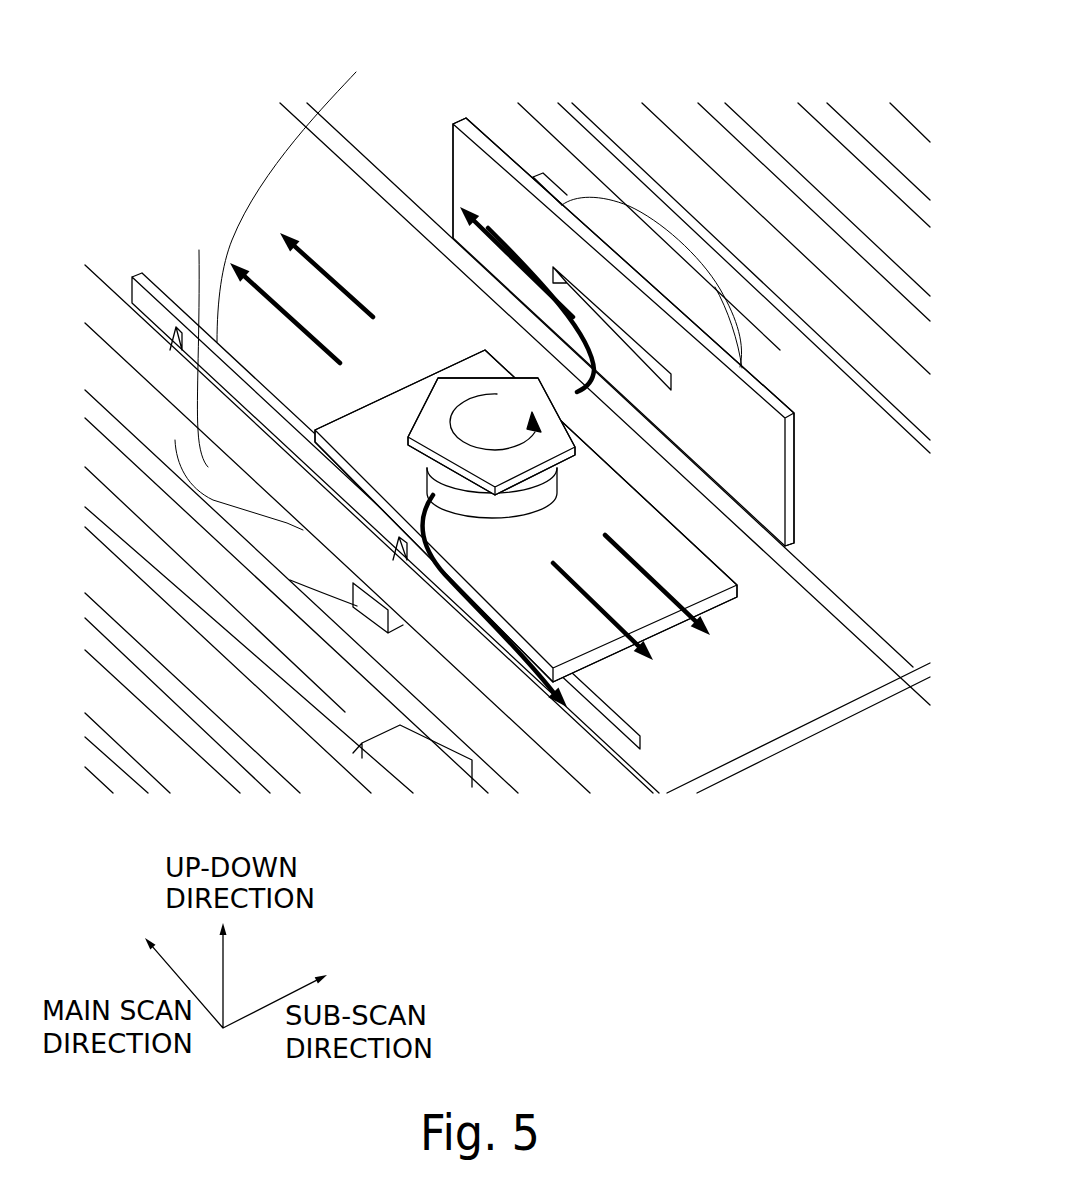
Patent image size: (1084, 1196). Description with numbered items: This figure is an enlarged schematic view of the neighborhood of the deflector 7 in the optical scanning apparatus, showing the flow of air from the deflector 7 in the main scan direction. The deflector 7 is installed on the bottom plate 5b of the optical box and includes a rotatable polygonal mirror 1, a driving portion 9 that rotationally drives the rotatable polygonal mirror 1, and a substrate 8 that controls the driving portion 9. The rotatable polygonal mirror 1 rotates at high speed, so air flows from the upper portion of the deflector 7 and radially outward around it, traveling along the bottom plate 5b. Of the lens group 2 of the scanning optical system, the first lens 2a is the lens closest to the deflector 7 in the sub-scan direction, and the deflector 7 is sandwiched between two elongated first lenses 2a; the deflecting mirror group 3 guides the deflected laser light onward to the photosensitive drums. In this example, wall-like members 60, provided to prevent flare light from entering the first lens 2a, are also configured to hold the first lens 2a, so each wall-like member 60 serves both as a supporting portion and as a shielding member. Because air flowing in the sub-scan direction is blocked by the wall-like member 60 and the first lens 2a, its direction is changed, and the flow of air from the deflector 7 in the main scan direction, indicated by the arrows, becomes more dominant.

The rotatable polygonal mirror 1 is at (517, 455).
The lens group 2 is at (451, 186).
The first lens 2a is at (199, 250).
The deflecting mirror group 3 is at (610, 123).
The bottom plate 5b is at (812, 660).
The deflector 7 is at (862, 833).
The substrate 8 is at (703, 587).
The driving portion 9 is at (490, 507).
The wall-like member 60 is at (478, 143).